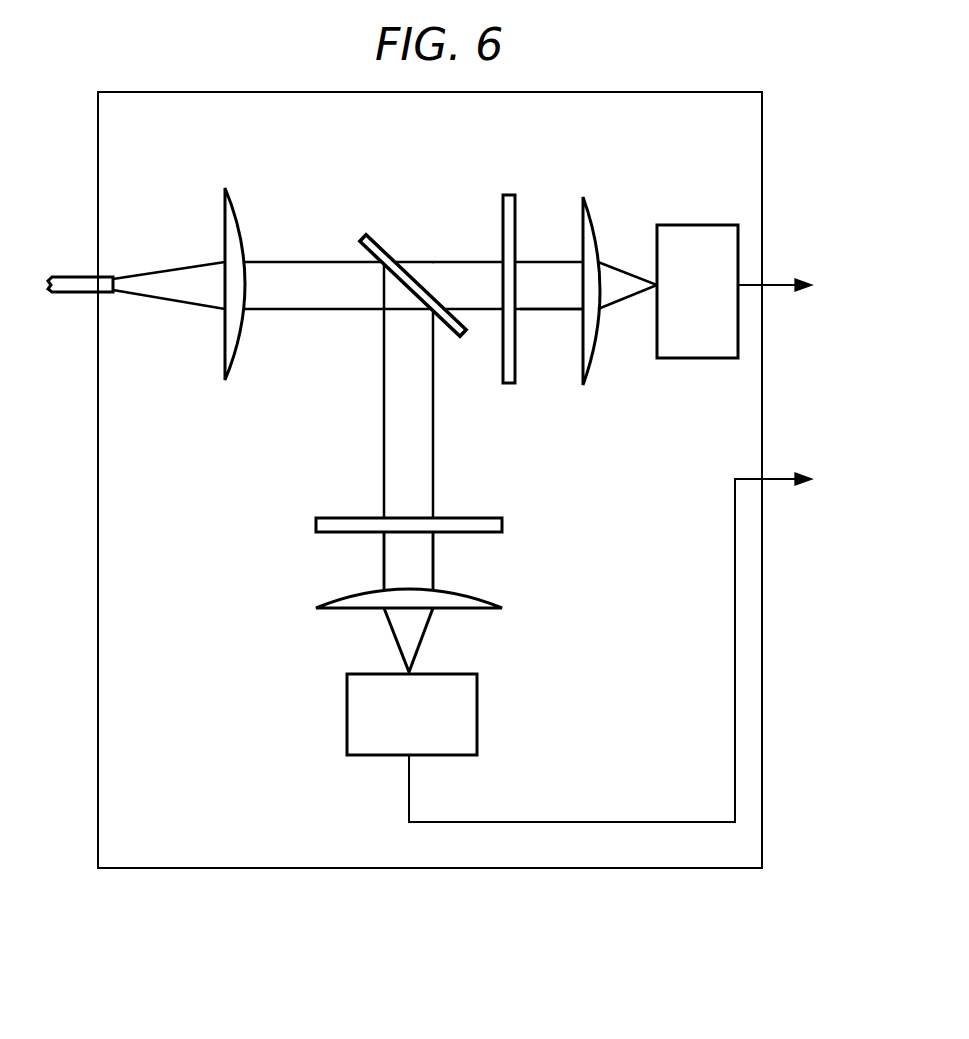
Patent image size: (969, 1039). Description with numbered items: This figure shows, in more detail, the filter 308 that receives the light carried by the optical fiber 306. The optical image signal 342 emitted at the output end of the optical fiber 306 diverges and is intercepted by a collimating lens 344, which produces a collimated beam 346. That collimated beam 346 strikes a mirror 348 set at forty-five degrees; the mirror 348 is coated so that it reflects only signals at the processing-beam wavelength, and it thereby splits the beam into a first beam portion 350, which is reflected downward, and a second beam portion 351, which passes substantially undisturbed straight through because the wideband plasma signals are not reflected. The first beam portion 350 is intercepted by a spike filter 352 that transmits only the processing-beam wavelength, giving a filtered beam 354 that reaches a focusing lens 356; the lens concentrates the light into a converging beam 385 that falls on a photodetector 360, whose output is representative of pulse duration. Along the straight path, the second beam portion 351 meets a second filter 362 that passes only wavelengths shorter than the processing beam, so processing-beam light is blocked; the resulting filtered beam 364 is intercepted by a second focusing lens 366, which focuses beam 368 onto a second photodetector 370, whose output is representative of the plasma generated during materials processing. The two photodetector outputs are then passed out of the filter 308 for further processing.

The optical fiber 306 is at (75, 293).
The filter 308 is at (700, 869).
The optical image signal 342 is at (185, 309).
The collimating lens 344 is at (236, 212).
The collimated beam 346 is at (320, 310).
The mirror 348 is at (368, 237).
The first beam portion 350 is at (433, 450).
The second beam portion 351 is at (433, 262).
The spike filter 352 is at (502, 528).
The filtered beam 354 is at (433, 565).
The focusing lens 356 is at (502, 602).
The photodetector 360 is at (477, 714).
The second filter 362 is at (515, 210).
The filtered beam 364 is at (540, 310).
The focusing lens 366 is at (592, 212).
The beam 368 is at (625, 300).
The second photodetector 370 is at (692, 225).
The converging light beam 385 is at (424, 636).